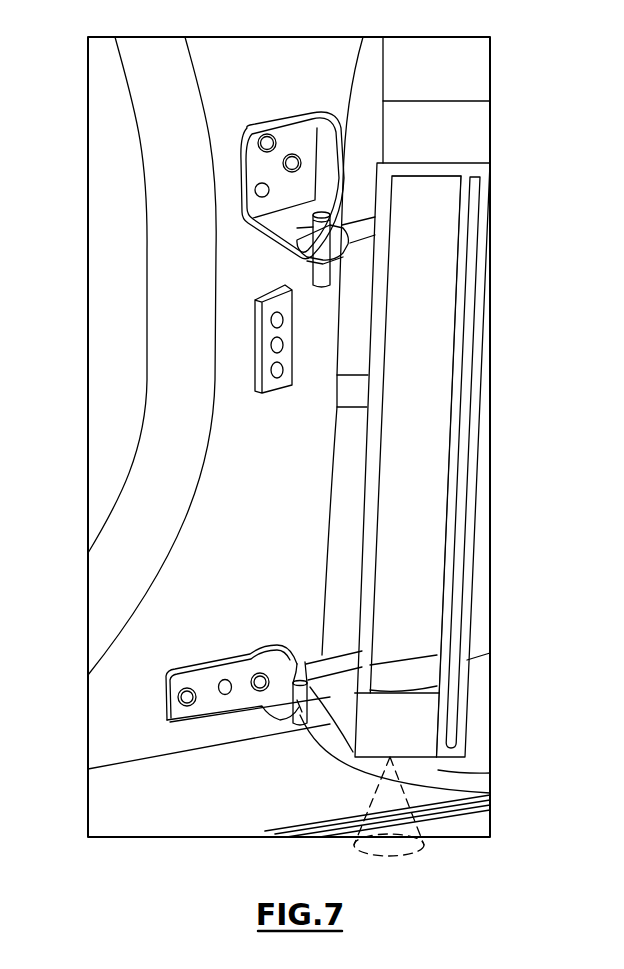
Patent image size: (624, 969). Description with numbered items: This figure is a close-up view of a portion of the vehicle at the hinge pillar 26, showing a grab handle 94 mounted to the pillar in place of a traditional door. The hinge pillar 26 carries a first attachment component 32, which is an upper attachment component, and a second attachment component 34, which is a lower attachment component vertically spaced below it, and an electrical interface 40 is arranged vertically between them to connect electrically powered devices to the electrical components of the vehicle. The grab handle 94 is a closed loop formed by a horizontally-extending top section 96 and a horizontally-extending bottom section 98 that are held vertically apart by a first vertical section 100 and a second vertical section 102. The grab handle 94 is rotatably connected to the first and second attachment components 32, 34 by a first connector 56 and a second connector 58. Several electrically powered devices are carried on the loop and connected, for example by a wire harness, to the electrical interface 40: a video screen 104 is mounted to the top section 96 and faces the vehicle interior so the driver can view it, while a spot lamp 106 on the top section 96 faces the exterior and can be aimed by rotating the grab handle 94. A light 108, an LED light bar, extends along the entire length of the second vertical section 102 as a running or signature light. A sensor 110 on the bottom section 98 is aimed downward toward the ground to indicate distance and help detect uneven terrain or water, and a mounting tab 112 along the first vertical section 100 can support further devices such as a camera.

The hinge pillar 26 is at (272, 486).
The first attachment component 32 is at (328, 118).
The second attachment component 34 is at (160, 728).
The electrical interface 40 is at (265, 333).
The first connector 56 is at (293, 238).
The second connector 58 is at (295, 703).
The grab handle 94 is at (497, 352).
The top section 96 is at (427, 176).
The bottom section 98 is at (392, 691).
The first vertical section 100 is at (377, 330).
The second vertical section 102 is at (457, 381).
The video screen 104 is at (473, 68).
The spot lamp 106 is at (473, 133).
The light 108 is at (465, 494).
The sensor 110 is at (420, 715).
The mounting tab 112 is at (360, 393).